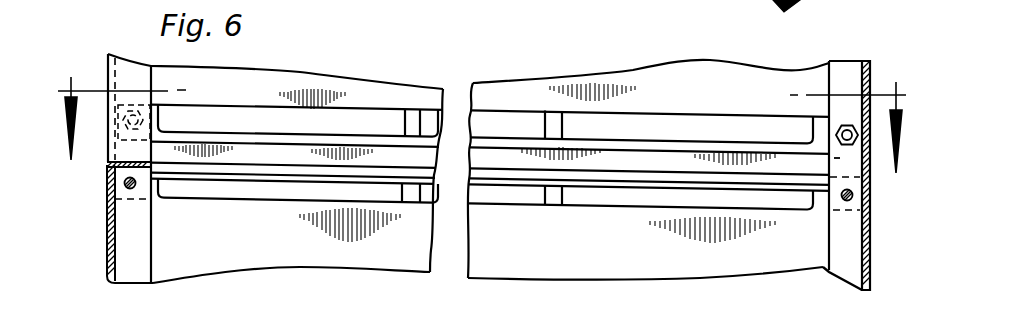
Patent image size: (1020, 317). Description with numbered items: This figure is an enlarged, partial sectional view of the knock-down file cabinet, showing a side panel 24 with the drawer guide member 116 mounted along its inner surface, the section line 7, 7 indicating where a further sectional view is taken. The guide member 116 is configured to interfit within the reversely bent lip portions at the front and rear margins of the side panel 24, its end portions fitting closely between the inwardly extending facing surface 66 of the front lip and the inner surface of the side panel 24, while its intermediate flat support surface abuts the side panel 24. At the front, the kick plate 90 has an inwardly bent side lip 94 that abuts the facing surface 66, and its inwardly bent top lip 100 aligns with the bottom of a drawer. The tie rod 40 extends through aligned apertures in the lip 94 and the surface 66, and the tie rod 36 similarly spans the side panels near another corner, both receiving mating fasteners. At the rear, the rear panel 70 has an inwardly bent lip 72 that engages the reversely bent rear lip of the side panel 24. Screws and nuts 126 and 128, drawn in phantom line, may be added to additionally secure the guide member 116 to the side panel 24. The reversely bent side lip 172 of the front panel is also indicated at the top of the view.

The section line 7- 7 is at (482, 101).
The side panel 24 is at (278, 253).
The tie rod 36 is at (858, 198).
The tie rod 40 is at (107, 199).
The facing surface of side panel lip portion 66 is at (137, 38).
The rear panel 70 is at (862, 188).
The inwardly bent lip of rear panel 72 is at (847, 240).
The front kick plate 90 is at (105, 246).
The inwardly bent side margin or lip of kick plate 94 is at (147, 250).
The inwardly bent top margin or lip of kick plate 100 is at (116, 150).
The guide member 116 is at (637, 123).
The mating screw and nut fastener 126 is at (165, 121).
The mating screw and nut fastener 128 is at (847, 123).
The reversely bent side lip of front panel 172 is at (707, 10).